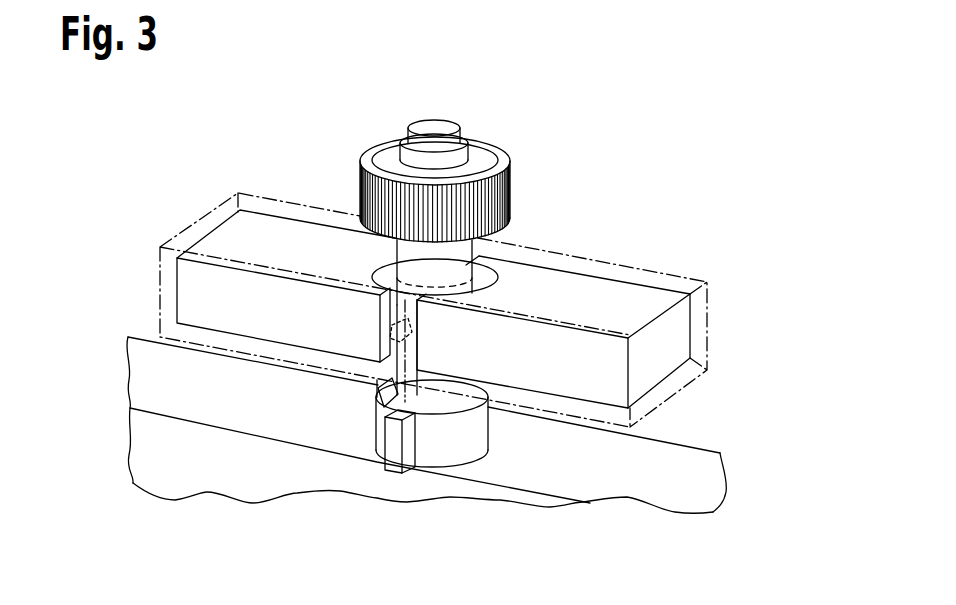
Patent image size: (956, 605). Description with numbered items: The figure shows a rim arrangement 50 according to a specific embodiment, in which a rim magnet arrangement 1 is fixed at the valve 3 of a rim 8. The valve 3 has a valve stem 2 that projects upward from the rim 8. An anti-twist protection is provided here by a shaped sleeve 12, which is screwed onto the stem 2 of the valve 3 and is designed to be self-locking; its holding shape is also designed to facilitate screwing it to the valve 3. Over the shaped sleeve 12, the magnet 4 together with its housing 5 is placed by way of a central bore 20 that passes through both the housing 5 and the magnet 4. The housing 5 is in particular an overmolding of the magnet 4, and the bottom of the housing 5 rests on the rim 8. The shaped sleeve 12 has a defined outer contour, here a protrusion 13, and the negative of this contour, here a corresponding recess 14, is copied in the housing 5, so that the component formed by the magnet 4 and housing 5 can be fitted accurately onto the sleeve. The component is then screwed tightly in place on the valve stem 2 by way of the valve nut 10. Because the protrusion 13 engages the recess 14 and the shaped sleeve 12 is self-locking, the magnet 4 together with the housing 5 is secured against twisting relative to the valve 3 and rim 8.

The rim magnet arrangement 1 is at (623, 105).
The valve stem 2 is at (442, 158).
The valve 3 is at (335, 137).
The magnet 4 is at (662, 342).
The housing 5 is at (698, 302).
The rim 8 is at (533, 460).
The valve nut 10 is at (495, 195).
The shaped sleeve 12 is at (469, 437).
The protrusion 13 is at (393, 460).
The recess 14 is at (387, 405).
The bore 20 is at (385, 272).
The rim arrangement 50 is at (720, 403).